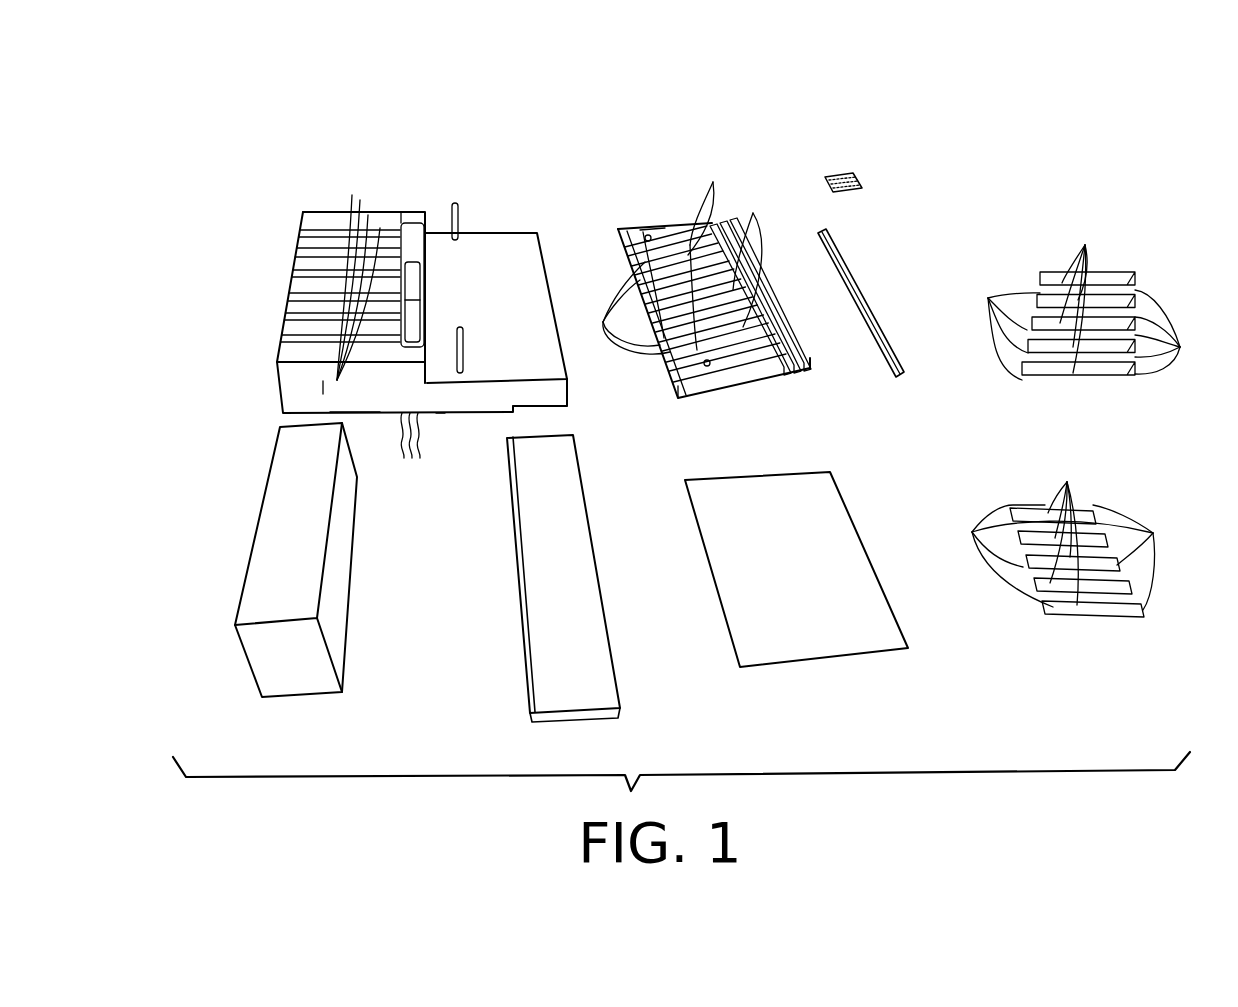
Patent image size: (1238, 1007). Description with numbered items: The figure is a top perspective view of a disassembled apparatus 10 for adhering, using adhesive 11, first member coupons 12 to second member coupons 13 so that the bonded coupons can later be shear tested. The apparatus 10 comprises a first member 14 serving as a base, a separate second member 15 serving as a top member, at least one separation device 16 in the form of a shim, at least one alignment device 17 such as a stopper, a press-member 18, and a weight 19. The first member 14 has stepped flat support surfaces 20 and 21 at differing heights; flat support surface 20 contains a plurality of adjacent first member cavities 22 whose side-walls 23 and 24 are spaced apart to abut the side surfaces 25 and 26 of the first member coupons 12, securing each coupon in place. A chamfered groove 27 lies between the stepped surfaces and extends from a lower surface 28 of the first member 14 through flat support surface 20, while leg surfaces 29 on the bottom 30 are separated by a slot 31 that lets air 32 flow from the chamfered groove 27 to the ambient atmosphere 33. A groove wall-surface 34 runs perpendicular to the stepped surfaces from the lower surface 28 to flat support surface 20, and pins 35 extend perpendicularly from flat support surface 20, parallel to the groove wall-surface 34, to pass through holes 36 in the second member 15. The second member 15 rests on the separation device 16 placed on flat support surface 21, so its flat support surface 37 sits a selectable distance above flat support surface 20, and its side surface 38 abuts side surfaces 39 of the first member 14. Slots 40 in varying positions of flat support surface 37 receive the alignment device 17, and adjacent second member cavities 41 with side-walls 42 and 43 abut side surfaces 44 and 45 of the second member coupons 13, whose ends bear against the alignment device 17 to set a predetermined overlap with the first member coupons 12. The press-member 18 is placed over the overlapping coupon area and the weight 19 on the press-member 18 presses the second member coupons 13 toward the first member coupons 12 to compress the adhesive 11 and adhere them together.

The apparatus 10 is at (704, 131).
The adhesive 11 is at (847, 173).
The first member coupon 12 is at (1084, 297).
The second member coupon 13 is at (1063, 536).
The first member 14 is at (305, 212).
The second member 15 is at (677, 232).
The separation device 16 is at (857, 658).
The alignment device 17 is at (862, 284).
The press-member 18 is at (613, 658).
The weight 19 is at (258, 558).
The flat support surface 20 is at (343, 226).
The flat support surface 21 is at (487, 232).
The first member cavity 22 is at (362, 255).
The side-wall 23 is at (308, 225).
The side-wall 24 is at (337, 380).
The side surface 25 is at (998, 333).
The side surface 26 is at (1172, 332).
The chamfered groove 27 is at (432, 222).
The lower surface 28 is at (410, 332).
The leg surface 29 is at (333, 413).
The bottom 30 is at (547, 410).
The slot 31 is at (440, 416).
The air 32 is at (418, 452).
The ambient atmosphere 33 is at (402, 195).
The groove wall-surface 34 is at (430, 280).
The pin 35 is at (457, 202).
The hole 36 is at (648, 232).
The flat support surface 37 is at (652, 228).
The side surface 38 is at (663, 370).
The side surface 39 is at (427, 212).
The slot 40 is at (797, 368).
The second member cavity 41 is at (622, 308).
The side-wall 42 is at (673, 268).
The side-wall 43 is at (729, 241).
The side surface 44 is at (1141, 557).
The side surface 45 is at (1044, 556).